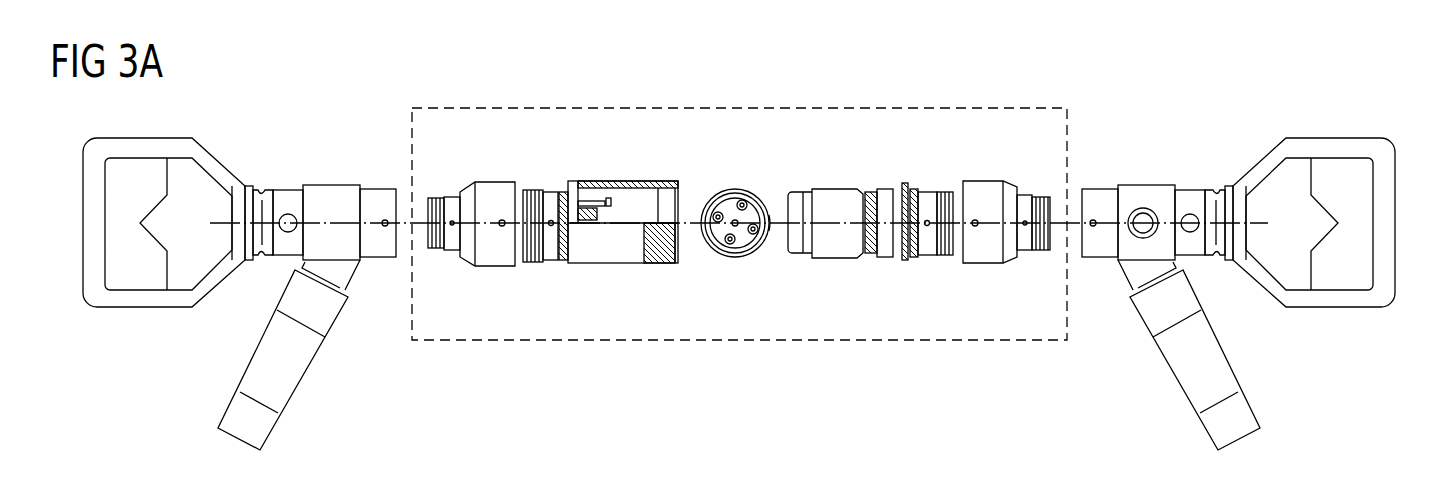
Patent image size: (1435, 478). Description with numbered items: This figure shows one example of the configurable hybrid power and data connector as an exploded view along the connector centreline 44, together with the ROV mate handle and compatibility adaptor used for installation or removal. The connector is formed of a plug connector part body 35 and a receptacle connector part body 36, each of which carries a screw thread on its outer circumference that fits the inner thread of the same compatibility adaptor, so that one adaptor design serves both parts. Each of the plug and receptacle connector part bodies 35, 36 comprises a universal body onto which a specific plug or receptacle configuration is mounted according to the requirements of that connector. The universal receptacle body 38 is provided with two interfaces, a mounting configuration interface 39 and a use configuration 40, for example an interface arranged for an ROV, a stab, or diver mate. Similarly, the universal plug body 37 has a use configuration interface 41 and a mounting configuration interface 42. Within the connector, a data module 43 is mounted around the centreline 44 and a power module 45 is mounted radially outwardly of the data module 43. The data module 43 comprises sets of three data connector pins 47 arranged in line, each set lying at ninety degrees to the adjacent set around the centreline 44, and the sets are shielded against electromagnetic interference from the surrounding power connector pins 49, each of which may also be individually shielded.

The plug connector part body 35 is at (884, 182).
The receptacle connector part body 36 is at (600, 173).
The universal plug body 37 is at (825, 198).
The universal receptacle body 38 is at (553, 198).
The mounting configuration interface 39 is at (565, 252).
The use configuration 40 is at (660, 255).
The use configuration interface 41 is at (872, 255).
The mounting configuration interface 42 is at (913, 258).
The data module 43 is at (743, 232).
The centreline 44 is at (777, 227).
The power module 45 is at (745, 202).
The data connector pins 47 is at (585, 225).
The power connector pins 49 is at (607, 203).